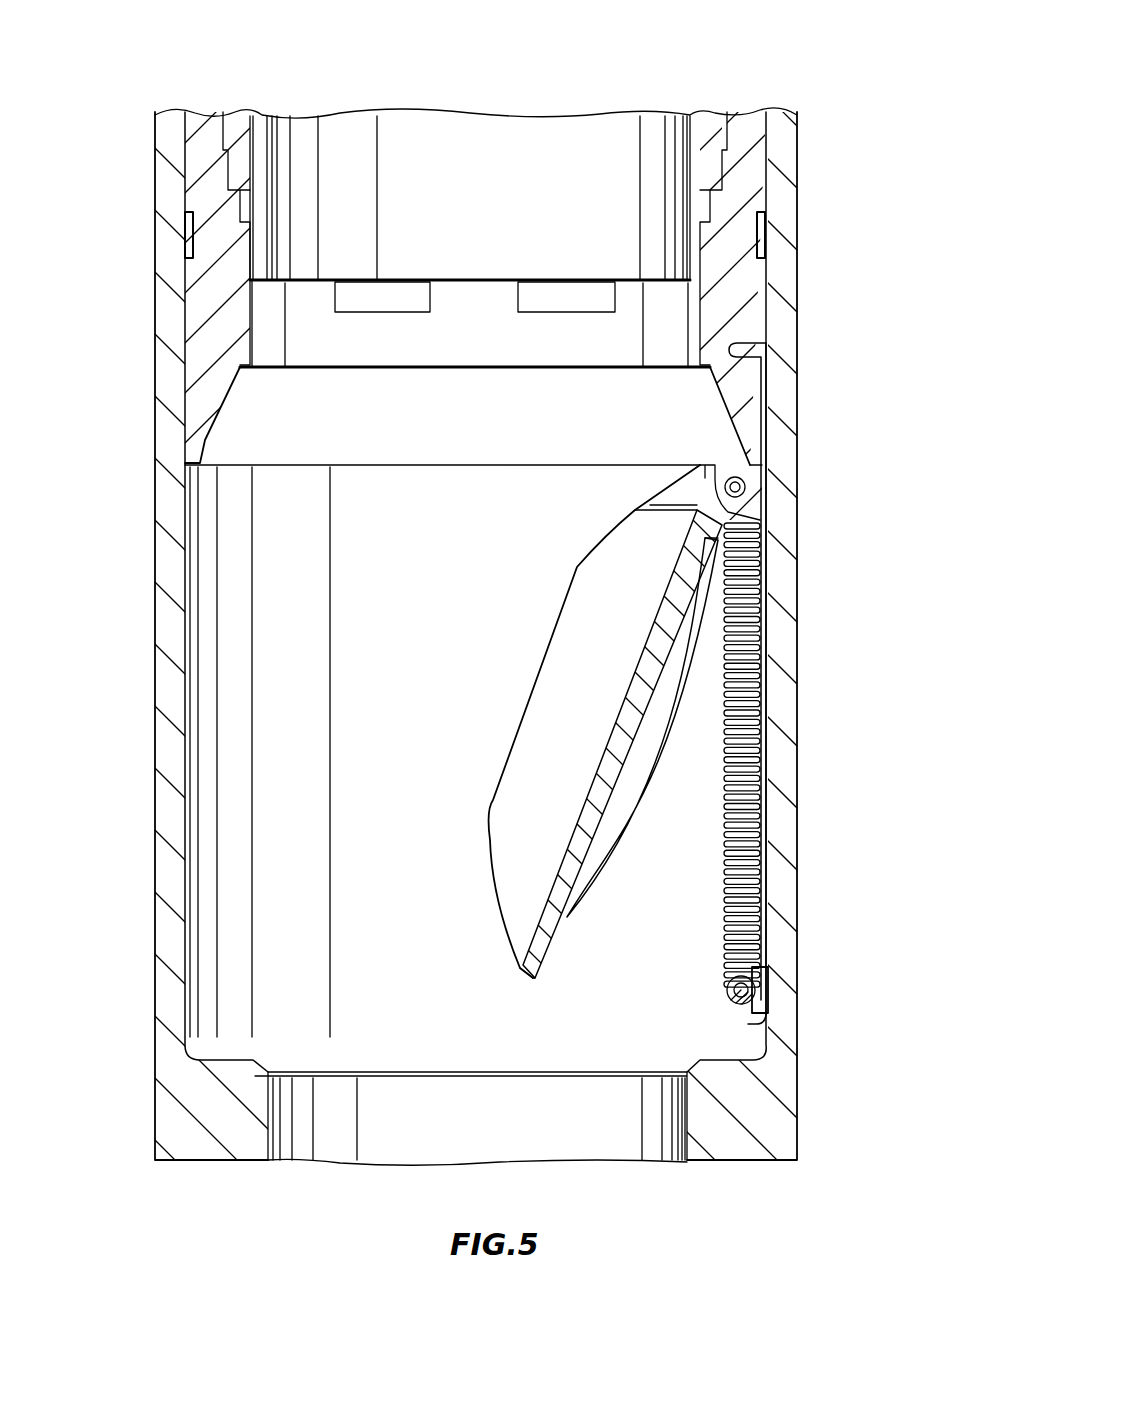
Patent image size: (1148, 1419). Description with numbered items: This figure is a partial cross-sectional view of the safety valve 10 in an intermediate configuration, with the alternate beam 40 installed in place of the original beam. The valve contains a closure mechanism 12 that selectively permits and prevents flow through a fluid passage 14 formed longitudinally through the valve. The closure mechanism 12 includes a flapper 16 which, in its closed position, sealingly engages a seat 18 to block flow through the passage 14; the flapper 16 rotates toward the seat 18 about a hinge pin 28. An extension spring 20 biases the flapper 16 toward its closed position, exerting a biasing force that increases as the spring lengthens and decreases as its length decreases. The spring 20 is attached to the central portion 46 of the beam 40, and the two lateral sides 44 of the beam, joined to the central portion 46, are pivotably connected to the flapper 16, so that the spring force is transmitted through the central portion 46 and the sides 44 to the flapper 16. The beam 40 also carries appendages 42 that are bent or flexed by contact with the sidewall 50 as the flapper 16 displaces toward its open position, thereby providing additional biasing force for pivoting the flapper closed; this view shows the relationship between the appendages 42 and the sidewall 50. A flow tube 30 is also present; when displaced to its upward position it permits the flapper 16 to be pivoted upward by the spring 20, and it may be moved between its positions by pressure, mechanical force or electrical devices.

The safety valve 10 is at (812, 68).
The closure mechanism 12 is at (585, 752).
The fluid passage 14 is at (465, 508).
The flapper 16 is at (545, 968).
The seat 18 is at (205, 447).
The extension spring 20 is at (770, 633).
The hinge pin 28 is at (745, 480).
The flow tube 30 is at (250, 241).
The alternate beam 40 is at (713, 743).
The appendages 42 is at (770, 617).
The lateral sides 44 is at (712, 608).
The central portion 46 is at (748, 1012).
The sidewall 50 is at (797, 823).